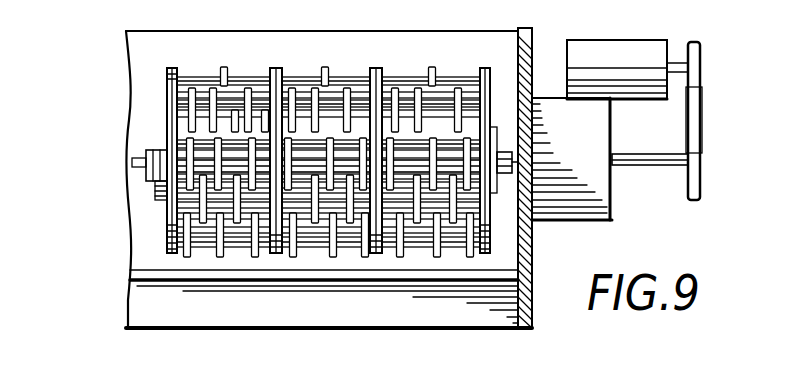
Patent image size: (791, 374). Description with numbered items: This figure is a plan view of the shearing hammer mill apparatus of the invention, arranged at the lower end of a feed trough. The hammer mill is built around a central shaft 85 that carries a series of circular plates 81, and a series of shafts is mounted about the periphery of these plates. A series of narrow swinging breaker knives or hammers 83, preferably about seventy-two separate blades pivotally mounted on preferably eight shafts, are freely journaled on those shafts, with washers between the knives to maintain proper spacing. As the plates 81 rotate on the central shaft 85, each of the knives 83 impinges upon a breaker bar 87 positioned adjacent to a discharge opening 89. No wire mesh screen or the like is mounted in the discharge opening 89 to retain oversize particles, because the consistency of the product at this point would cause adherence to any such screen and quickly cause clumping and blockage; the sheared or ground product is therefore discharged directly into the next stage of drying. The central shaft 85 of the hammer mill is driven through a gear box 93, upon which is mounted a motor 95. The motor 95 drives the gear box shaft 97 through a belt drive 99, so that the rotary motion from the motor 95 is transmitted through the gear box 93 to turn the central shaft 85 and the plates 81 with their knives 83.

The circular plates 81 is at (377, 74).
The breaker knives 83 is at (453, 104).
The central shaft 85 is at (512, 165).
The breaker bar 87 is at (227, 272).
The discharge opening 89 is at (155, 313).
The gear box 93 is at (612, 131).
The motor 95 is at (605, 47).
The gear box shaft 97 is at (626, 167).
The belt drive 99 is at (698, 117).